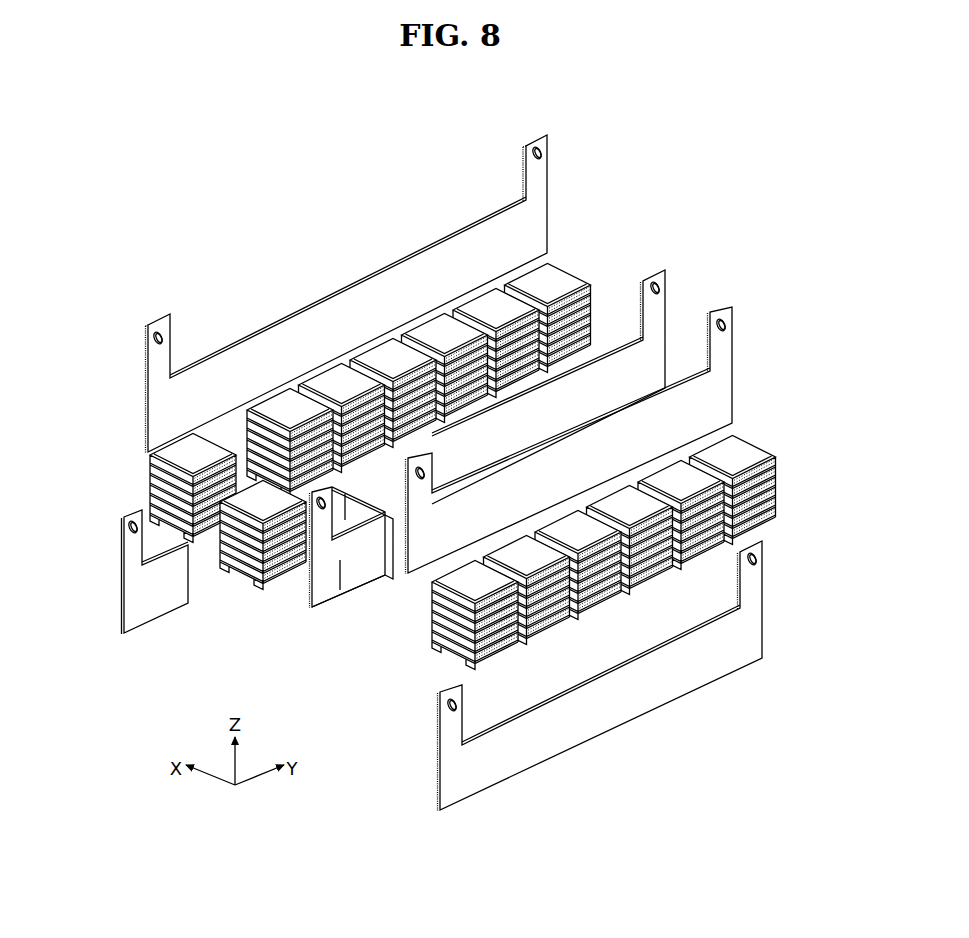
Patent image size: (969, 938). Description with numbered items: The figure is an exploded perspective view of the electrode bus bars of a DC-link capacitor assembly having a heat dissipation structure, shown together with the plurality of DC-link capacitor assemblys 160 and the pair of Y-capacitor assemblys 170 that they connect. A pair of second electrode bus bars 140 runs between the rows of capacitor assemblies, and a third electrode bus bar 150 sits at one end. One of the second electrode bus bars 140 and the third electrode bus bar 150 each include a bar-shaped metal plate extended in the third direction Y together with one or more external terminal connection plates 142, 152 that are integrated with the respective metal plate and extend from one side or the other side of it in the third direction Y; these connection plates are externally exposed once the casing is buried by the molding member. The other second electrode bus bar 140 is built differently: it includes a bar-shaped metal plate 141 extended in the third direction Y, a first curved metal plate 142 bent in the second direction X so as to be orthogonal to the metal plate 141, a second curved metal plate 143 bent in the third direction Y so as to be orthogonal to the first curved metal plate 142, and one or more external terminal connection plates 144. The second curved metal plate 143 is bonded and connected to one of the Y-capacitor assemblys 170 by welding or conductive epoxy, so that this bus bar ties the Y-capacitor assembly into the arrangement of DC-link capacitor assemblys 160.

The second electrode bus bar 140 is at (524, 464).
The bar-shaped metal plate 141 is at (615, 392).
The first curved metal plate 142 is at (735, 320).
The second curved metal plate 143 is at (362, 565).
The external terminal connection plate 144 is at (665, 283).
The third electrode bus bar 150 is at (125, 566).
The external terminal connection plate 152 is at (128, 558).
The DC-link capacitor assembly 160 is at (529, 261).
The Y-capacitor assembly 170 is at (141, 479).